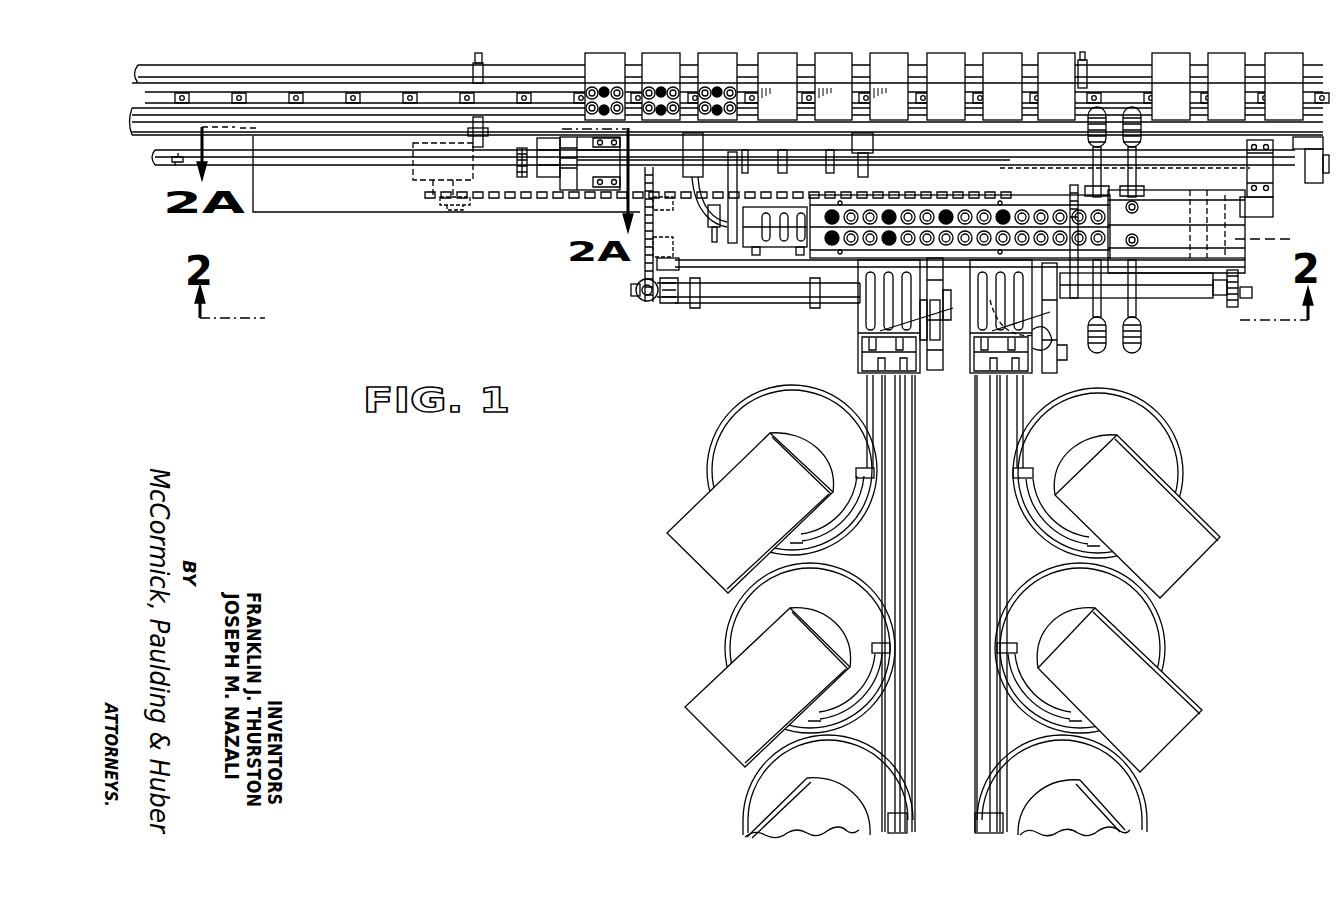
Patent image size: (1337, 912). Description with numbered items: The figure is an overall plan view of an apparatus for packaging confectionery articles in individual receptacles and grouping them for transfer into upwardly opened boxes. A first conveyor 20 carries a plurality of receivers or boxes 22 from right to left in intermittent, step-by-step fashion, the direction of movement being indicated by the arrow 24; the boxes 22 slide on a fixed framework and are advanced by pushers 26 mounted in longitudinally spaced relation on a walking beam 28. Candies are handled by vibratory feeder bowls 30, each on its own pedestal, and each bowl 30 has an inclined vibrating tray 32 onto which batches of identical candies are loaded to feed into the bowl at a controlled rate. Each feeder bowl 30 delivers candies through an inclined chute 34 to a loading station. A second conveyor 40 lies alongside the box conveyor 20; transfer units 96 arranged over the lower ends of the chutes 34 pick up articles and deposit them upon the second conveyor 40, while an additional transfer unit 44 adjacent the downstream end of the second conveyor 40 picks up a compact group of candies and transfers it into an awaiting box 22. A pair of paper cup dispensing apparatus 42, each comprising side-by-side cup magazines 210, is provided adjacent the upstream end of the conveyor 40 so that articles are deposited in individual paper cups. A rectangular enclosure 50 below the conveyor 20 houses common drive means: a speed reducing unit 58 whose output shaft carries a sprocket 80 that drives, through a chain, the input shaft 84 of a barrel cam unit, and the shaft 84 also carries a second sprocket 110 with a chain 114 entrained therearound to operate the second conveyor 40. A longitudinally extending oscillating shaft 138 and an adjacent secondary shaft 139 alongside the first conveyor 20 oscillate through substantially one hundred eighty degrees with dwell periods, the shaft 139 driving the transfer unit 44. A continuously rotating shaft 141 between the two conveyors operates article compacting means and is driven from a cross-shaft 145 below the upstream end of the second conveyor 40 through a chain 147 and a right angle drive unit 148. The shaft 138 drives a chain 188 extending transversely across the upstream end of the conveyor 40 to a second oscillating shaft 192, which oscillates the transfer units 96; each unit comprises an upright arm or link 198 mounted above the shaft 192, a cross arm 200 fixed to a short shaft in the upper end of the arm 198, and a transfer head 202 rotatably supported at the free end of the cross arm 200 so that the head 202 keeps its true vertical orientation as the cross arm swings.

The first conveyor 20 is at (372, 56).
The receivers 22 is at (1053, 54).
The arrow 24 is at (538, 32).
The pushers 26 is at (353, 95).
The walking beam 28 is at (421, 97).
The vibratory feeder bowls 30 is at (716, 432).
The vibrating tray 32 is at (727, 577).
The chute 34 is at (1000, 395).
The second conveyor 40 is at (841, 272).
The paper cup dispensing apparatus 42 is at (1176, 221).
The transfer unit 44 is at (774, 268).
The rectangular enclosure 50 is at (301, 214).
The speed reducing unit 58 is at (413, 174).
The sprocket 80 is at (458, 206).
The input shaft 84 is at (560, 199).
The transfer units 96 is at (846, 355).
The second sprocket 110 is at (518, 194).
The chain 114 is at (560, 190).
The oscillating shaft 138 is at (175, 168).
The secondary shaft 139 is at (172, 160).
The continuously rotating shaft 141 is at (764, 163).
The cross-shaft 145 is at (1279, 238).
The chain 147 is at (1274, 206).
The right angle drive unit 148 is at (1273, 214).
The chain 188 is at (1240, 309).
The second oscillating shaft 192 is at (1150, 298).
The upright arm 198 is at (878, 332).
The cross arm 200 is at (1060, 372).
The transfer head 202 is at (980, 366).
The cup magazines 210 is at (1132, 107).